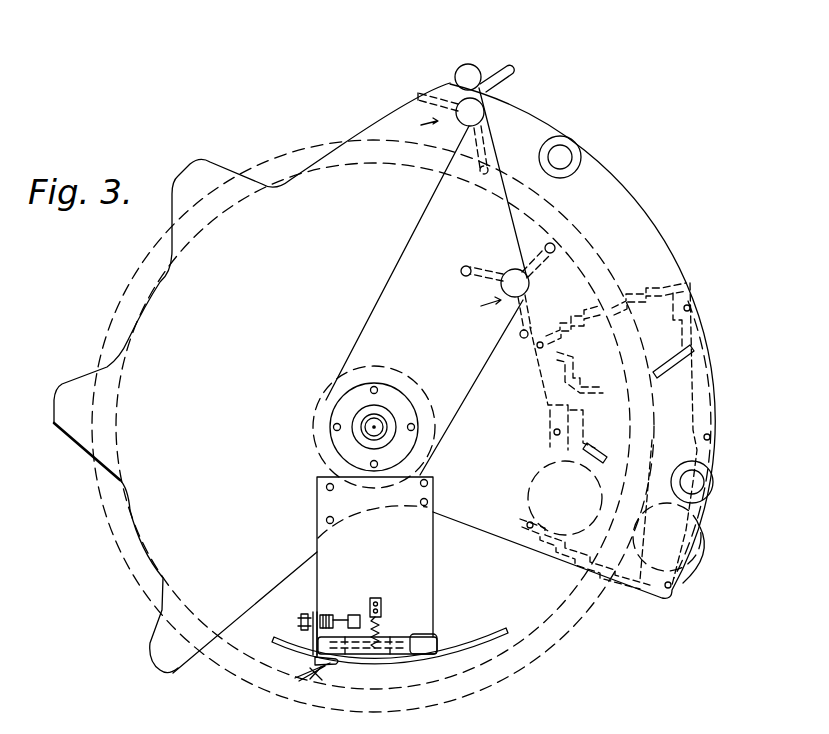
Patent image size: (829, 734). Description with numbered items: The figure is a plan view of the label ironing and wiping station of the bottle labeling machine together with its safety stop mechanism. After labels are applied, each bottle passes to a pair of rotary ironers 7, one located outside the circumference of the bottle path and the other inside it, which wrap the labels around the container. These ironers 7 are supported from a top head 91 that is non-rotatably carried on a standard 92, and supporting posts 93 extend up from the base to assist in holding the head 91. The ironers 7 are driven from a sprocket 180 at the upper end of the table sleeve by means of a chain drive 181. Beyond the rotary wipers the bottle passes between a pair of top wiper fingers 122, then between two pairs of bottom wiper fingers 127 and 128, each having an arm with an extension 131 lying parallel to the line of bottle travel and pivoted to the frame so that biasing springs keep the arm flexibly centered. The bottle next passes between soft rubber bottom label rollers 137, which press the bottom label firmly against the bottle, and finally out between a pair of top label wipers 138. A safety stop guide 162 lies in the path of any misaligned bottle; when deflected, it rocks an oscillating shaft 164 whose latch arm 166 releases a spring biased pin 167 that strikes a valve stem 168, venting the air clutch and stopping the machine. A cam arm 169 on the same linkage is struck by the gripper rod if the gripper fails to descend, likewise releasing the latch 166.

The ironers 7 is at (452, 217).
The top head 91 is at (503, 128).
The standard 92 is at (383, 418).
The supporting posts 93 is at (562, 156).
The top wiper fingers 122 is at (573, 316).
The bottom wiper fingers 127 is at (565, 375).
The bottom wiper fingers 128 is at (572, 440).
The extension 131 is at (528, 488).
The bottom label rollers 137 is at (706, 556).
The top label wipers 138 is at (585, 562).
The safety stop guide 162 is at (480, 638).
The oscillating shaft 164 is at (390, 642).
The latch arm 166 is at (312, 641).
The spring biased pin 167 is at (307, 612).
The valve stem 168 is at (345, 615).
The cam arm 169 is at (313, 674).
The sprocket 180 is at (363, 427).
The chain drive 181 is at (401, 284).